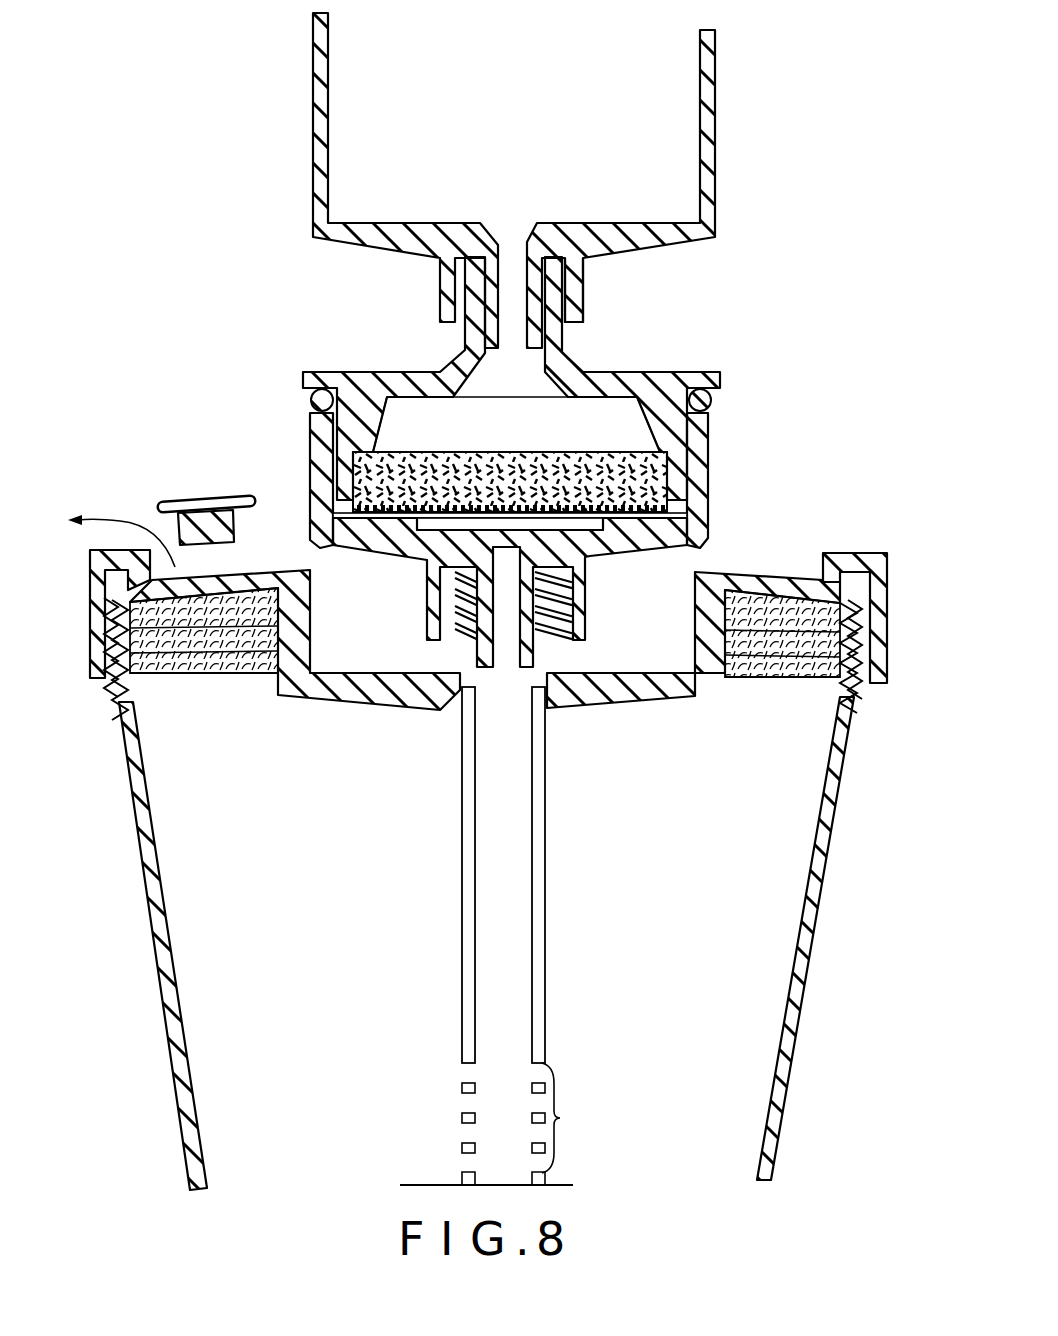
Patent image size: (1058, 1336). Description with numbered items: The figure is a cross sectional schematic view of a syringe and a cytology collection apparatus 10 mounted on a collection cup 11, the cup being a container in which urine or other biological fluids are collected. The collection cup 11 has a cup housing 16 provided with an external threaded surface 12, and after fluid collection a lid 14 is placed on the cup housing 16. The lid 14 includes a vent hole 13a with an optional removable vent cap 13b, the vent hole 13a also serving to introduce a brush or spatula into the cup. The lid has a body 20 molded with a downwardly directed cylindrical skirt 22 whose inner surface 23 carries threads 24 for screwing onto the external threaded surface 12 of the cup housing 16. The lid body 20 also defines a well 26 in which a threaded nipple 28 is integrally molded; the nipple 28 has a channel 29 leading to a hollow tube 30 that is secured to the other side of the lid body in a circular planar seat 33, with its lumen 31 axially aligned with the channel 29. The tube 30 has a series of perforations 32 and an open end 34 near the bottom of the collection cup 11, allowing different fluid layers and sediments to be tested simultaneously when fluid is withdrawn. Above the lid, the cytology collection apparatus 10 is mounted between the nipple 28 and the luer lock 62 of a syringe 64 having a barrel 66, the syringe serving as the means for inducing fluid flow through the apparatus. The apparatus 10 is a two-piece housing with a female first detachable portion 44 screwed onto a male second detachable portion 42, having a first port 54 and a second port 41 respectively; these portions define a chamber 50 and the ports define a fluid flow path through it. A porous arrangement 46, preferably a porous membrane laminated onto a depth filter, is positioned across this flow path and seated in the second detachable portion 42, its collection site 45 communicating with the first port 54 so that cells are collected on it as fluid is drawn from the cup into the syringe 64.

The cytology collection apparatus 10 is at (272, 443).
The collection cup 11 is at (856, 808).
The external threaded surface 12 is at (853, 682).
The vent hole 13a is at (120, 527).
The removable vent cap 13b is at (165, 500).
The lid 14 is at (900, 600).
The cup housing 16 is at (150, 905).
The lid body 20 is at (697, 697).
The skirt 22 is at (92, 610).
The inner surface 23 is at (94, 672).
The threads 24 is at (116, 700).
The well 26 is at (312, 628).
The threaded nipple 28 is at (552, 661).
The channel 29 is at (507, 652).
The hollow tube 30 is at (460, 830).
The lumen 31 is at (515, 924).
The perforations 32 is at (572, 1118).
The circular planar seat 33 is at (535, 690).
The open end 34 is at (418, 1183).
The second port 41 is at (562, 338).
The second detachable portion 42 is at (720, 374).
The first detachable portion 44 is at (712, 532).
The collection site 45 is at (647, 522).
The porous arrangement 46 is at (670, 472).
The chamber 50 is at (528, 435).
The first port 54 is at (430, 627).
The syringe luer lock 62 is at (584, 268).
The syringe 64 is at (288, 98).
The barrel 66 is at (717, 112).